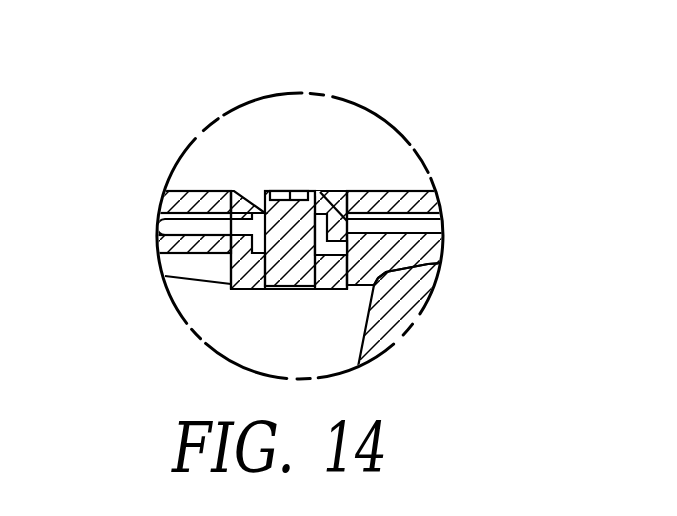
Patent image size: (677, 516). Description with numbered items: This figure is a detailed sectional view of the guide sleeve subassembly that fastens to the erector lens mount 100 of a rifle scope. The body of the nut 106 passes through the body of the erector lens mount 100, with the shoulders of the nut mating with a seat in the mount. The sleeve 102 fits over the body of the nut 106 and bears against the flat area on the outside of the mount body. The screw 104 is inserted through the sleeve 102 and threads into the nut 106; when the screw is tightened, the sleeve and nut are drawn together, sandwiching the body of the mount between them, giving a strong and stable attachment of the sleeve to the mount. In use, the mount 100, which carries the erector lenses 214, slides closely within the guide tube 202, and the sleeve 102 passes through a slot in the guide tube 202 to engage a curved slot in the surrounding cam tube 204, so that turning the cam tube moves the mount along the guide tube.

The erector lens mount 100 is at (423, 256).
The guide sleeve 102 is at (226, 188).
The screw 104 is at (299, 185).
The nut 106 is at (230, 295).
The guide tube 202 is at (422, 227).
The cam tube 204 is at (429, 185).
The erector lenses 214 is at (399, 299).